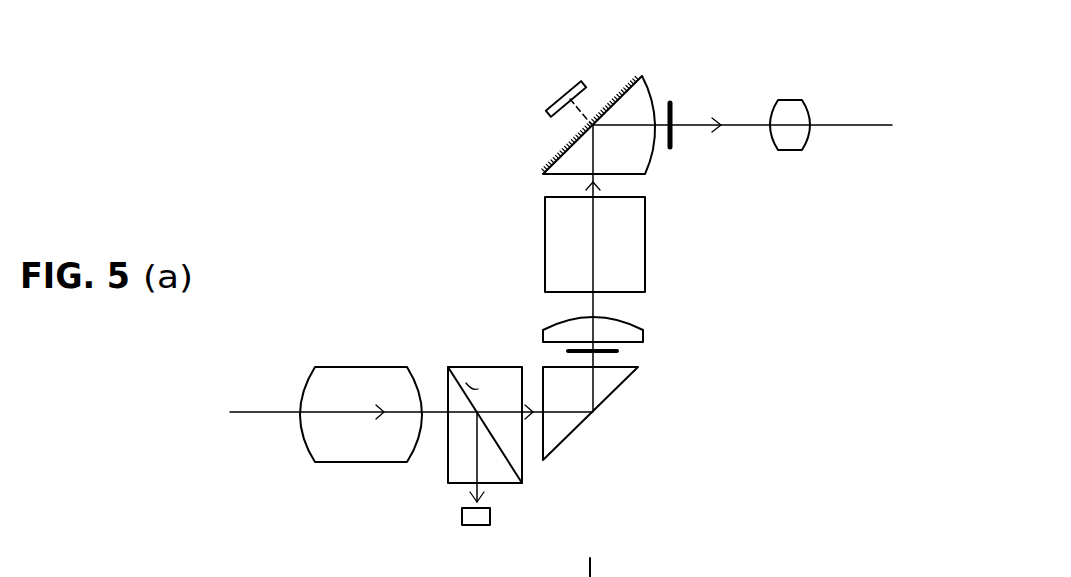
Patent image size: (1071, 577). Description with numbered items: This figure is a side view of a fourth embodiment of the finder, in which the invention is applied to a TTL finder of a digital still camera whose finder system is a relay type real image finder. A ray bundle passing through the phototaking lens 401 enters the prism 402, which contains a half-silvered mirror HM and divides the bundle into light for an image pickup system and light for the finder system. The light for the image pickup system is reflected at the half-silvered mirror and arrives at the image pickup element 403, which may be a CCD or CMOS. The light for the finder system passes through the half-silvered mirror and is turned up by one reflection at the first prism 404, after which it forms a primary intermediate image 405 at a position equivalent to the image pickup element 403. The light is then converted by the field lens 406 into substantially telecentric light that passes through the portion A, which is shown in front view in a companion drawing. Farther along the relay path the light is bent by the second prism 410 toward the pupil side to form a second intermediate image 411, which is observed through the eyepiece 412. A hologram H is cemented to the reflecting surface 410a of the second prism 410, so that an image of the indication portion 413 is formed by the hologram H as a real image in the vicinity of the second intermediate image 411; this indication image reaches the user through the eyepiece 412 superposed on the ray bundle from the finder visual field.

The phototaking lens 401 is at (343, 367).
The prism 402 is at (467, 360).
The image pickup element 403 is at (481, 526).
The first prism 404 is at (617, 399).
The primary intermediate image 405 is at (617, 352).
The field lens 406 is at (635, 326).
The portion A is at (512, 193).
The second prism 410 is at (629, 91).
The reflecting surface 410a is at (618, 100).
The hologram H is at (563, 153).
The second intermediate image 411 is at (673, 101).
The eyepiece 412 is at (791, 100).
The indication portion 413 is at (558, 101).